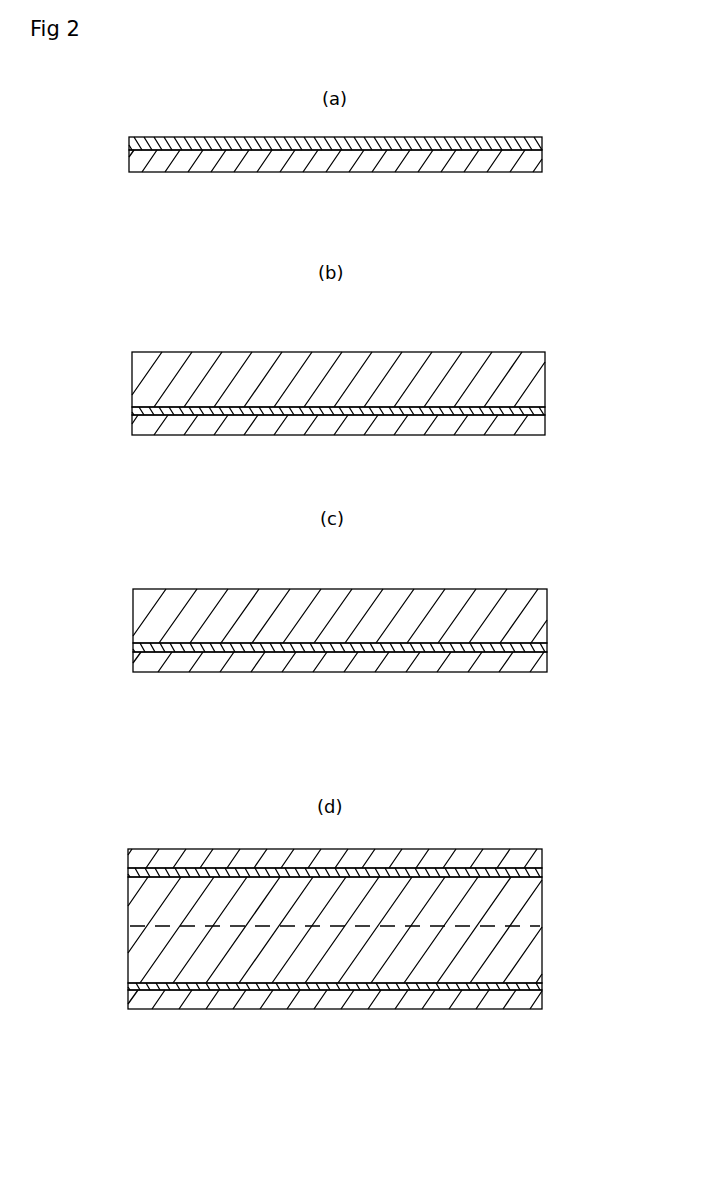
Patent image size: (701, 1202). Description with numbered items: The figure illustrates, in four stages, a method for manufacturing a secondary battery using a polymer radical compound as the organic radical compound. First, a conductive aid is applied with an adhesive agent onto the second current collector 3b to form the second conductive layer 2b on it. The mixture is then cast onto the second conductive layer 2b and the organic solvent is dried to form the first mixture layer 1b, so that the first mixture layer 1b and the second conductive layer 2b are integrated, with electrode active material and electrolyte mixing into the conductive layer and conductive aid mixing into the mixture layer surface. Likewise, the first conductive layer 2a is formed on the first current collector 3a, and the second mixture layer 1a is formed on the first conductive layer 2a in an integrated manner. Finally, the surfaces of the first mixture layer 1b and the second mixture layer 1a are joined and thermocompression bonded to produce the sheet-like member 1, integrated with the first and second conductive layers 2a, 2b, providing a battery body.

The sheet-like member 1 is at (531, 939).
The second mixture layer 1a is at (524, 617).
The first mixture layer 1b is at (532, 385).
The first conductive layer 2a is at (535, 648).
The second conductive layer 2b is at (544, 147).
The first current collector 3a is at (530, 666).
The second current collector 3b is at (530, 167).